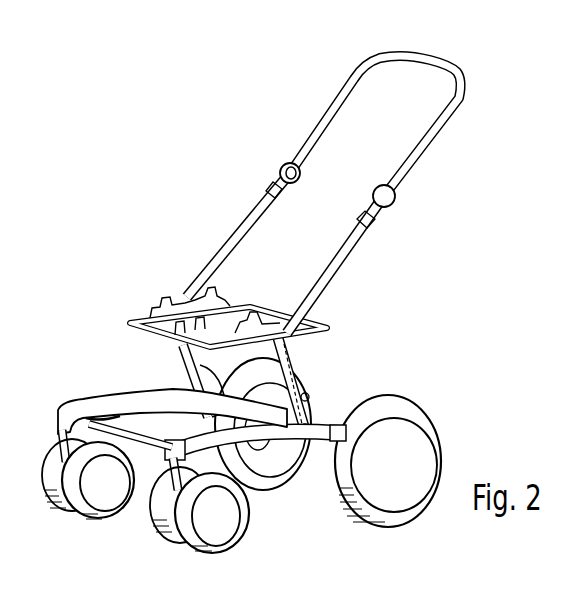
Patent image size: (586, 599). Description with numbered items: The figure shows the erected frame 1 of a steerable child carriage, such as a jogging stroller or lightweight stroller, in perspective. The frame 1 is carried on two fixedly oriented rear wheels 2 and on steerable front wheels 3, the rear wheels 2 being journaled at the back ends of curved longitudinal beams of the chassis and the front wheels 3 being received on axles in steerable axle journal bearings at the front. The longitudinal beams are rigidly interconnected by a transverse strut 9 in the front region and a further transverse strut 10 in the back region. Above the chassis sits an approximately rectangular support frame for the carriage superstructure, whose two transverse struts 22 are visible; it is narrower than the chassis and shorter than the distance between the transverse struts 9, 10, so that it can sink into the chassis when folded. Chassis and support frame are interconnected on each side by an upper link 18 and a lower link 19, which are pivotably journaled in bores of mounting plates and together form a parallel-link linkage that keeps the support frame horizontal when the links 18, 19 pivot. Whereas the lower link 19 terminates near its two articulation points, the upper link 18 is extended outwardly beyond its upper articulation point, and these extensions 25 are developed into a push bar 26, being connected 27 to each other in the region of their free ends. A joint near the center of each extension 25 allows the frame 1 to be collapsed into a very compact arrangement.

The frame 1 is at (104, 302).
The rear wheels 2 is at (403, 410).
The front wheels 3 is at (93, 525).
The transverse strut 9 is at (123, 430).
The transverse strut 10 is at (320, 453).
The upper link 18 is at (299, 378).
The lower link 19 is at (325, 400).
The transverse struts 22 is at (272, 308).
The extension 25 is at (213, 260).
The push bar 26 is at (328, 270).
The connection 27 is at (437, 60).